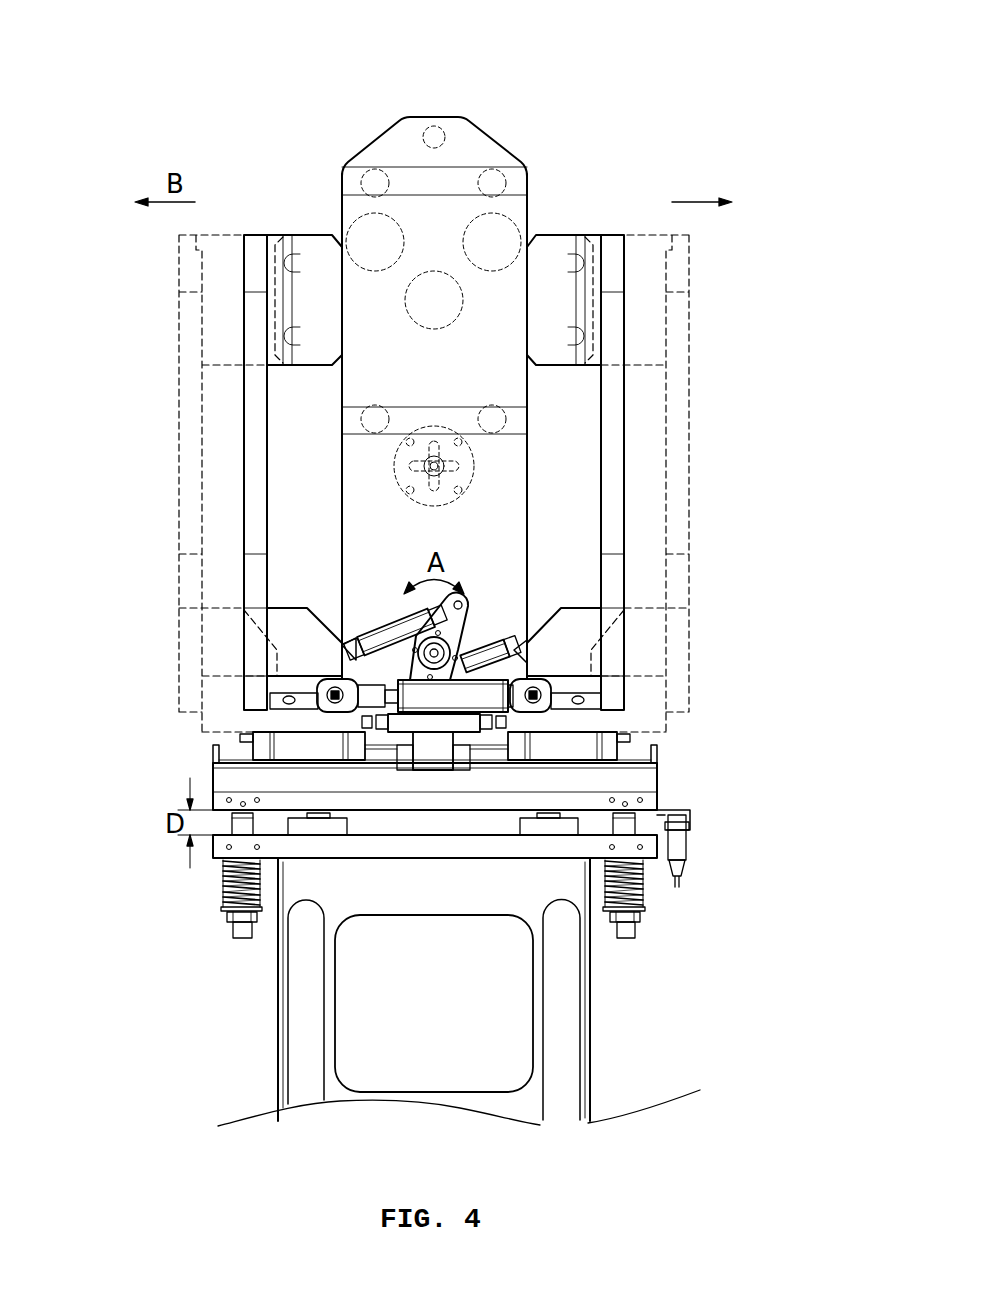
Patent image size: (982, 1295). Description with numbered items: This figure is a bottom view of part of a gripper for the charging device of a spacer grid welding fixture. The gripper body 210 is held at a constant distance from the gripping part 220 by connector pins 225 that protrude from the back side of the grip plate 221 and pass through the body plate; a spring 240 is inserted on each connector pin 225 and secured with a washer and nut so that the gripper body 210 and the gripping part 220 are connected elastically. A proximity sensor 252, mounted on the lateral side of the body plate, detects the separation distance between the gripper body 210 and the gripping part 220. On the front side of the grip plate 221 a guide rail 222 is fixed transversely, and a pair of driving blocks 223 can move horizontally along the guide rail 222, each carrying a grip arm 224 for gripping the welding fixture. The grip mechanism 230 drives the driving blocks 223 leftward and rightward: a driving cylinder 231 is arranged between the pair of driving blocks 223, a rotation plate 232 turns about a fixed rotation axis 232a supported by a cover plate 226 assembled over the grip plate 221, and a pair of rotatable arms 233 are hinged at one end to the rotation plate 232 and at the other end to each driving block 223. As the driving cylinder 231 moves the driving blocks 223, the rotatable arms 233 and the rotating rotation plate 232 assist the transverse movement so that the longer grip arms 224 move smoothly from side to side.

The gripper body 210 is at (692, 988).
The gripping part 220 is at (537, 128).
The grip plate 221 is at (648, 780).
The guide rail 222 is at (213, 750).
The driving block 223 is at (272, 702).
The grip arm 224 is at (258, 457).
The connector pin 225 is at (630, 826).
The cover plate 226 is at (411, 122).
The grip mechanism 230 is at (497, 586).
The driving cylinder 231 is at (447, 695).
The rotation plate 232 is at (447, 600).
The rotation axis 232a is at (470, 648).
The rotatable arm 233 is at (378, 622).
The spring 240 is at (643, 893).
The proximity sensor 252 is at (686, 850).